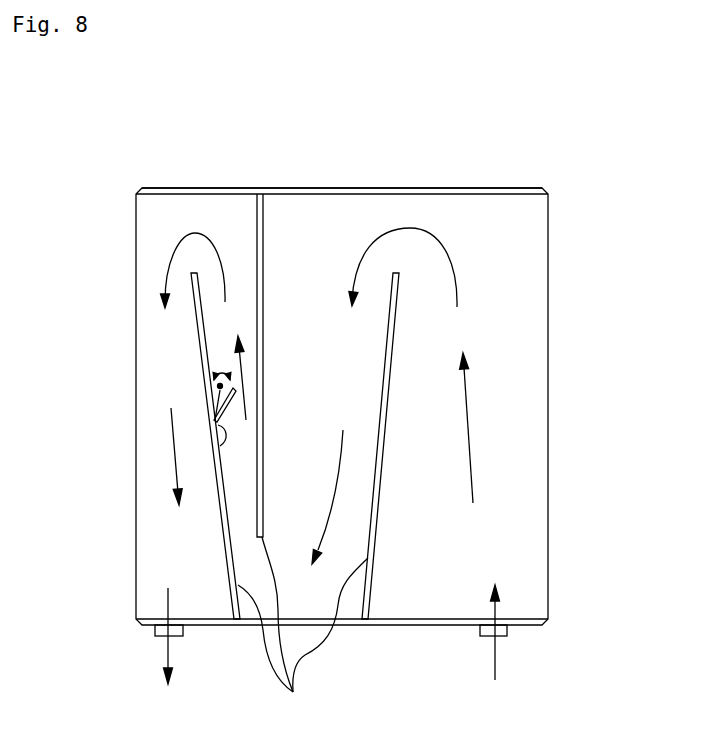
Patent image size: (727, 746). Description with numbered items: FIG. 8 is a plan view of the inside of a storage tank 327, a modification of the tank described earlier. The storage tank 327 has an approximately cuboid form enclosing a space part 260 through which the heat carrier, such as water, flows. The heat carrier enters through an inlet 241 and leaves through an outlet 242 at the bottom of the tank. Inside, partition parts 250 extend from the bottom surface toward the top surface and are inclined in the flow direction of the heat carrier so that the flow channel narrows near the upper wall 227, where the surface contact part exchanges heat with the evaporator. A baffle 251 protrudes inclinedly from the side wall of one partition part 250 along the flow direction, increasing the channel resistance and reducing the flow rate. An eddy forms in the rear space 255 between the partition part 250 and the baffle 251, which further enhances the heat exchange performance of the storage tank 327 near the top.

The storage tank 327 is at (498, 167).
The top wall 227 is at (403, 188).
The baffle 251 is at (218, 449).
The rear space 255 is at (218, 386).
The space part 260 is at (443, 427).
The outlet 242 is at (150, 630).
The inlet 241 is at (508, 630).
The partition parts 250 is at (303, 632).